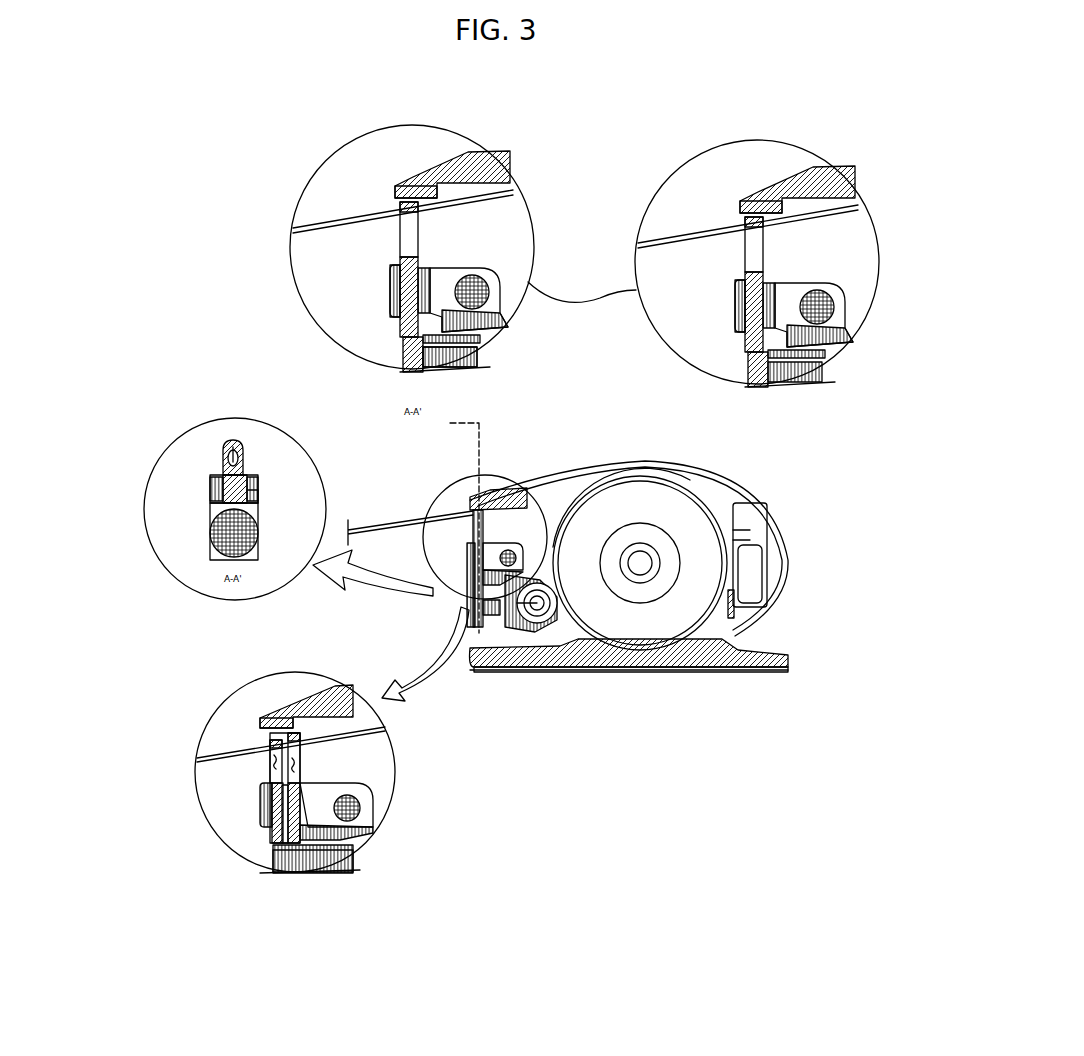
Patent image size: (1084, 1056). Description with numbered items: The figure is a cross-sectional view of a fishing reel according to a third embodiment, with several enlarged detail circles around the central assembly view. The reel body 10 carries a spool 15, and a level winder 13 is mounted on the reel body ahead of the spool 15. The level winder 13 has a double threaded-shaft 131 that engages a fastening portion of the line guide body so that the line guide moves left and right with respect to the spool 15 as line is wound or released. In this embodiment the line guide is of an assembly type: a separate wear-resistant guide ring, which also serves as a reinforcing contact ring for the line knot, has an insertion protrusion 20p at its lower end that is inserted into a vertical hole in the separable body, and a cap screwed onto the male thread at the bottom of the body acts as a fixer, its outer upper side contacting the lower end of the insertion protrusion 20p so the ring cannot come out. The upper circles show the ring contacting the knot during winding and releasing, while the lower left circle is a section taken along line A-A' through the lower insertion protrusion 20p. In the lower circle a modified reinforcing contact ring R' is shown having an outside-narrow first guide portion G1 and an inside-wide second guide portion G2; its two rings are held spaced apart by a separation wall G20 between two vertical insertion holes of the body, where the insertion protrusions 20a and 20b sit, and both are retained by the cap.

The reel body 10 is at (700, 462).
The level winder 13 is at (523, 636).
The double threaded-shaft 131 is at (558, 672).
The spool 15 is at (640, 497).
The insertion protrusion 20p is at (400, 300).
The insertion protrusion 20a is at (262, 820).
The insertion protrusion 20b is at (272, 832).
The reinforcing contact ring R' is at (181, 820).
The first guide portion G1 is at (270, 762).
The second guide portion G2 is at (292, 766).
The separation wall G20 is at (305, 795).